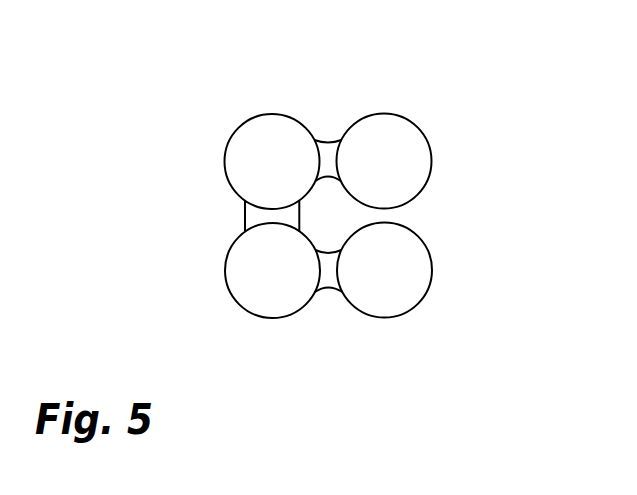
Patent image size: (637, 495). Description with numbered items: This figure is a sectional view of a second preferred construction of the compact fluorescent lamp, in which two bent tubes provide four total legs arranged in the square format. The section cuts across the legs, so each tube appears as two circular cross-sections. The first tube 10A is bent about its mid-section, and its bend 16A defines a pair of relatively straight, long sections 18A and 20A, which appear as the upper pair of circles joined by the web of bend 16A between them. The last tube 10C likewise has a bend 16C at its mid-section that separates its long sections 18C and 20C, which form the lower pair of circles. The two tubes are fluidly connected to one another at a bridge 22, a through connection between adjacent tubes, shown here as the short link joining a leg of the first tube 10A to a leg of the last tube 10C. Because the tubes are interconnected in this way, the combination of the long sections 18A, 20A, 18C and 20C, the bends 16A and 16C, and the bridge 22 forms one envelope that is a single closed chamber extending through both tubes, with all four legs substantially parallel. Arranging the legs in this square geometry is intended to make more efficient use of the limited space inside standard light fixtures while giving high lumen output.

The first tube 10A is at (394, 115).
The last tube 10C is at (393, 302).
The bend 16A is at (325, 141).
The long section 18A is at (406, 120).
The long section 20A is at (260, 116).
The bend 16C is at (330, 289).
The long section 18C is at (278, 318).
The long section 20C is at (403, 314).
The bridge 22 is at (245, 218).